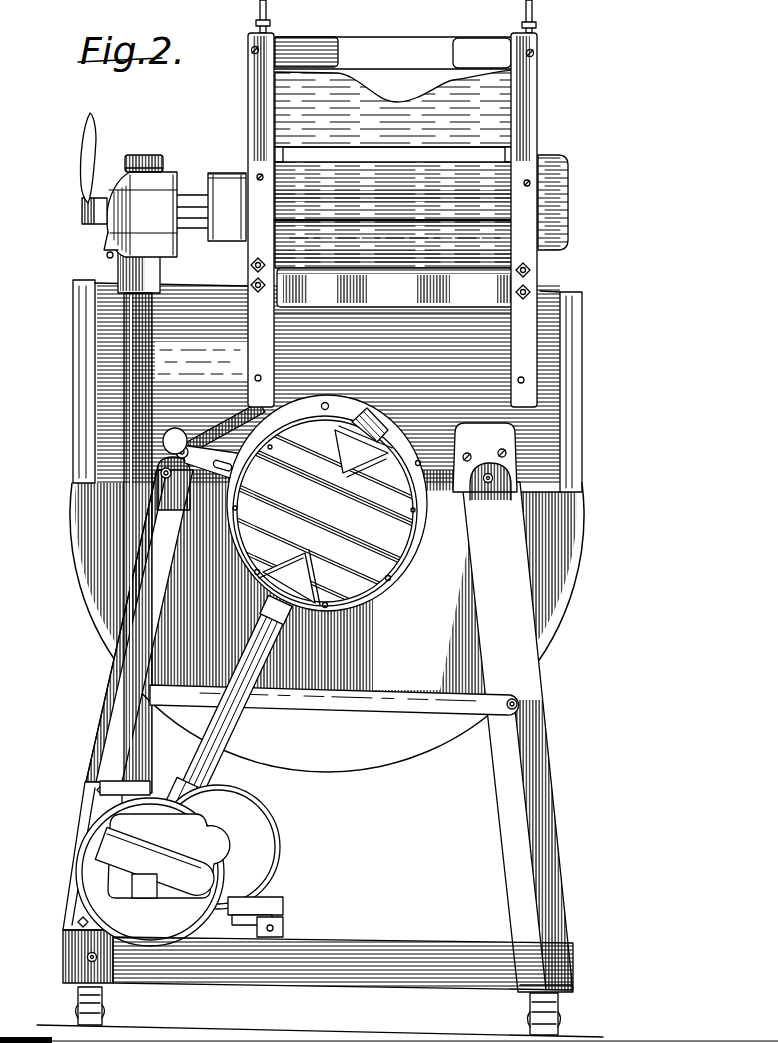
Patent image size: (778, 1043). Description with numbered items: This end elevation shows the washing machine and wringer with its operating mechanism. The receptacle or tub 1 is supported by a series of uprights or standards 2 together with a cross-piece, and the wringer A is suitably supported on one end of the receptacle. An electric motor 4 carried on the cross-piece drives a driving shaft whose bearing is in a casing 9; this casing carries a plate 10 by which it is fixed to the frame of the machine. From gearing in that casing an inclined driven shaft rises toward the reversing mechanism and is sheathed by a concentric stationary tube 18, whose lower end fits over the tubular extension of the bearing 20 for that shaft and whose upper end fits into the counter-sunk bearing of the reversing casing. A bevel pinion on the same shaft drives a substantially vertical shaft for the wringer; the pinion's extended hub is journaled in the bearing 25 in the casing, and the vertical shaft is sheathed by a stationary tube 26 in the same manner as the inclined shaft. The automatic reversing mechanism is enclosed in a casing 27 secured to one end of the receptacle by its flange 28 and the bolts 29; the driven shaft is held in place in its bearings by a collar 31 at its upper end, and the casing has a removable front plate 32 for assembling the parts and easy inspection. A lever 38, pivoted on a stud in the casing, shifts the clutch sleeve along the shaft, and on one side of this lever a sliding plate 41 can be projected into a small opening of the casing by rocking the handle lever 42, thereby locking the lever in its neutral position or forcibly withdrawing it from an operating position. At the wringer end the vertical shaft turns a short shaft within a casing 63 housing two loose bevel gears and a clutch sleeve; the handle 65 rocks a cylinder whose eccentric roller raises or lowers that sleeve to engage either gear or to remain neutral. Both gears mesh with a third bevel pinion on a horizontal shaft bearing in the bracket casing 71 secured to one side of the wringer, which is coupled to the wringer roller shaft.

The receptacle or tub 1 is at (398, 747).
The uprights or standards 2 is at (502, 616).
The electric motor 4 is at (272, 860).
The casing 9 is at (153, 924).
The plate 10 is at (70, 895).
The stationary tube 18 is at (220, 762).
The bearing 20 is at (204, 808).
The bearing 25 is at (117, 798).
The stationary tube 26 is at (129, 347).
The casing 27 is at (407, 570).
The flange 28 is at (407, 440).
The bolts 29 is at (330, 403).
The collar 31 is at (383, 422).
The removable front plate 32 is at (370, 550).
The lever 38 is at (175, 433).
The sliding plate 41 is at (192, 437).
The handle lever 42 is at (228, 417).
The casing 63 is at (118, 178).
The handle 65 is at (83, 163).
The bracket casing 71 is at (217, 237).
The wringer A is at (535, 140).